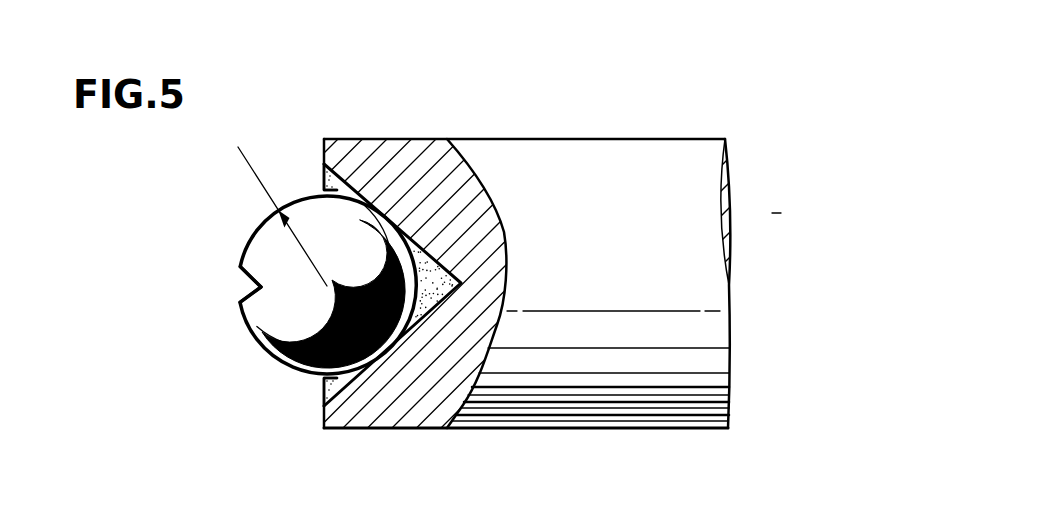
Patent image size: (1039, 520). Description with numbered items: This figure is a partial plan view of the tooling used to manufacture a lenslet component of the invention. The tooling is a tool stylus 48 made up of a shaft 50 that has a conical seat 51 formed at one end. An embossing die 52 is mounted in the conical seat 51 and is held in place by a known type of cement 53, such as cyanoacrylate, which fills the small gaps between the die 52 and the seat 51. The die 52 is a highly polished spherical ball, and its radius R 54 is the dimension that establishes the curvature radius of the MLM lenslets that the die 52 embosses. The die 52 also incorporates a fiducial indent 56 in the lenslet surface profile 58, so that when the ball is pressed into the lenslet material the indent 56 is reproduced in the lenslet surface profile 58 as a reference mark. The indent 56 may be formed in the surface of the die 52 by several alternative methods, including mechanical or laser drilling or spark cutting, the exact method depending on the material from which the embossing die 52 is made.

The tool stylus 48 is at (544, 103).
The shaft 50 is at (614, 259).
The conical seat 51 is at (327, 378).
The embossing die 52 is at (315, 323).
The cement 53 is at (330, 190).
The radius R 54 is at (308, 252).
The fiducial indent 56 is at (251, 290).
The lenslet surface profile 58 is at (250, 232).
The radius R is at (271, 205).